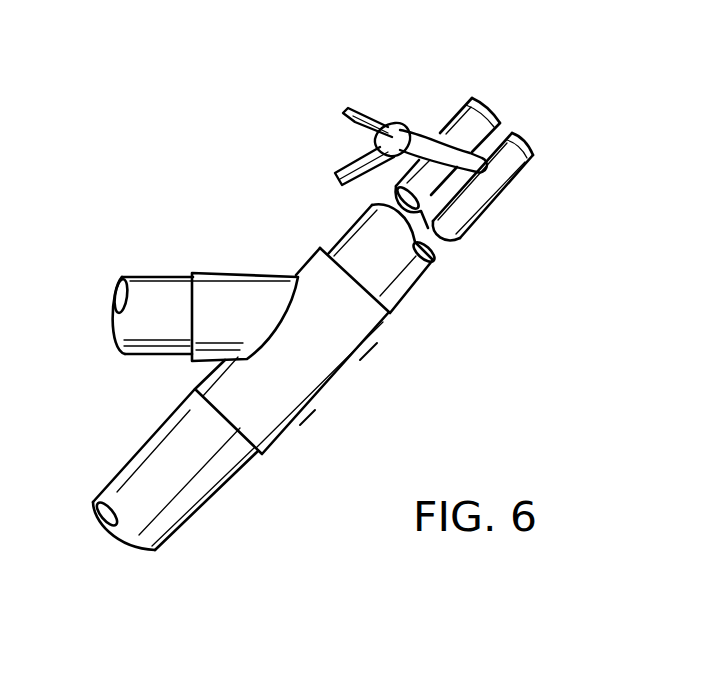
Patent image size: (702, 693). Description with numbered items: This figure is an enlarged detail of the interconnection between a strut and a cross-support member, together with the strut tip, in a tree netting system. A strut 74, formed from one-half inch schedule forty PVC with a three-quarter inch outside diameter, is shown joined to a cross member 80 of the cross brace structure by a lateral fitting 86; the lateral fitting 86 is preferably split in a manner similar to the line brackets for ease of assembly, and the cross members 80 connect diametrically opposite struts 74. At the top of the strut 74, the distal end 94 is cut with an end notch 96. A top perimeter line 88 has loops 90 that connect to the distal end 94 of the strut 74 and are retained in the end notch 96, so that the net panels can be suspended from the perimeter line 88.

The strut 74 is at (196, 502).
The cross member 80 is at (153, 278).
The lateral fitting 86 is at (337, 378).
The top perimeter line 88 is at (367, 115).
The loop 90 is at (450, 138).
The distal end 94 is at (482, 213).
The end notch 96 is at (513, 173).